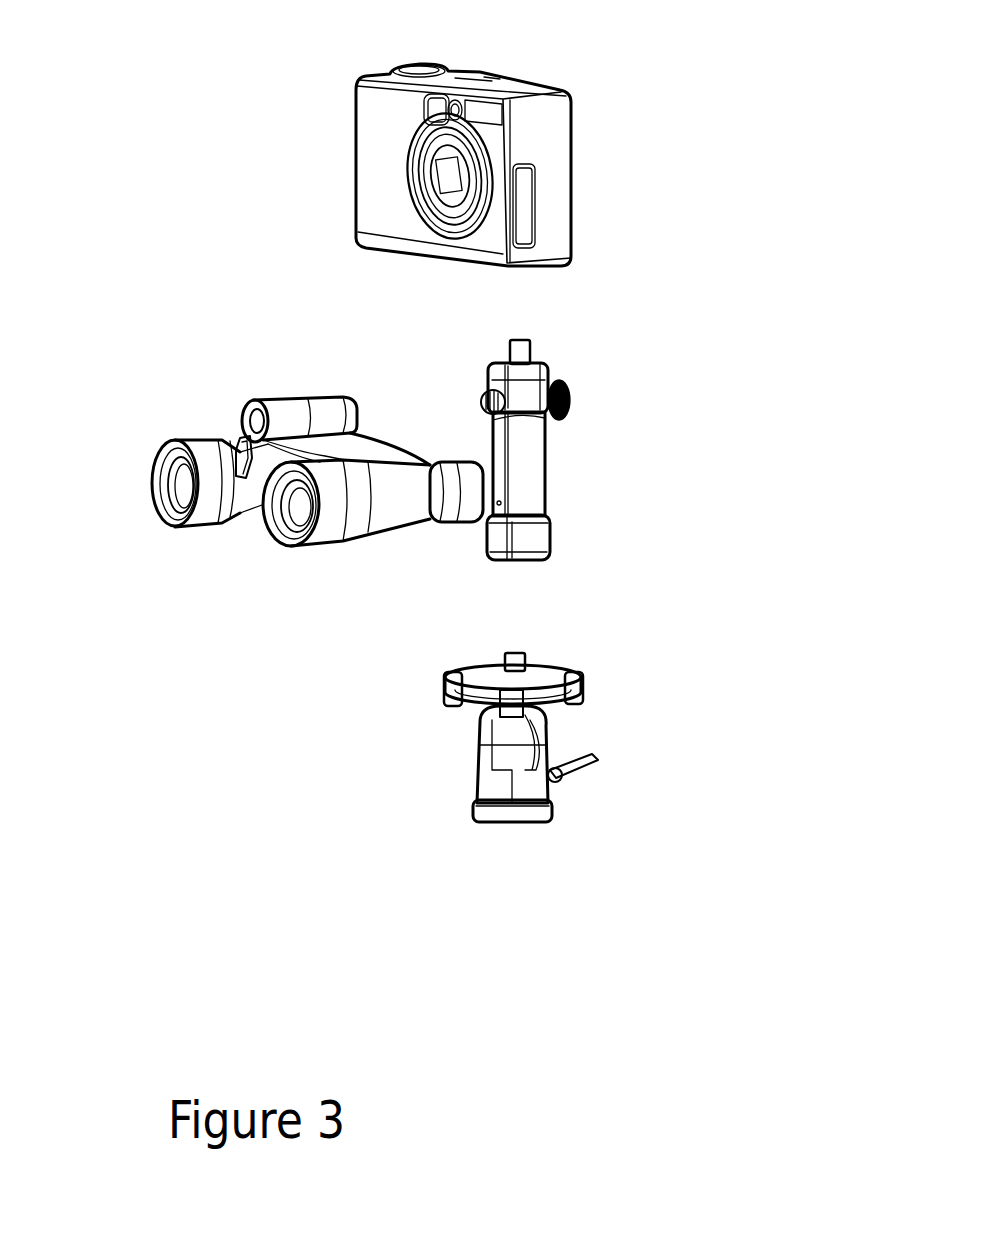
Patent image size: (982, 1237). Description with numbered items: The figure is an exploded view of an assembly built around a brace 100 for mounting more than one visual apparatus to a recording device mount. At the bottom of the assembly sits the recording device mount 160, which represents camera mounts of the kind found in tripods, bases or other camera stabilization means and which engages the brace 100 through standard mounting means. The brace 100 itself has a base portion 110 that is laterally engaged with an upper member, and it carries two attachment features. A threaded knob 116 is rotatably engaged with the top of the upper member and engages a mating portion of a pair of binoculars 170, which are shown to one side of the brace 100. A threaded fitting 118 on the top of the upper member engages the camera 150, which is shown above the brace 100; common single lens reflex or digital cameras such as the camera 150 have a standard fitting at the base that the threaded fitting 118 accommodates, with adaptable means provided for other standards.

The brace 100 is at (671, 356).
The base portion 110 is at (550, 542).
The threaded knob 116 is at (570, 400).
The threaded fitting 118 is at (528, 340).
The camera 150 is at (598, 167).
The recording device mount 160 is at (607, 695).
The binoculars 170 is at (167, 553).